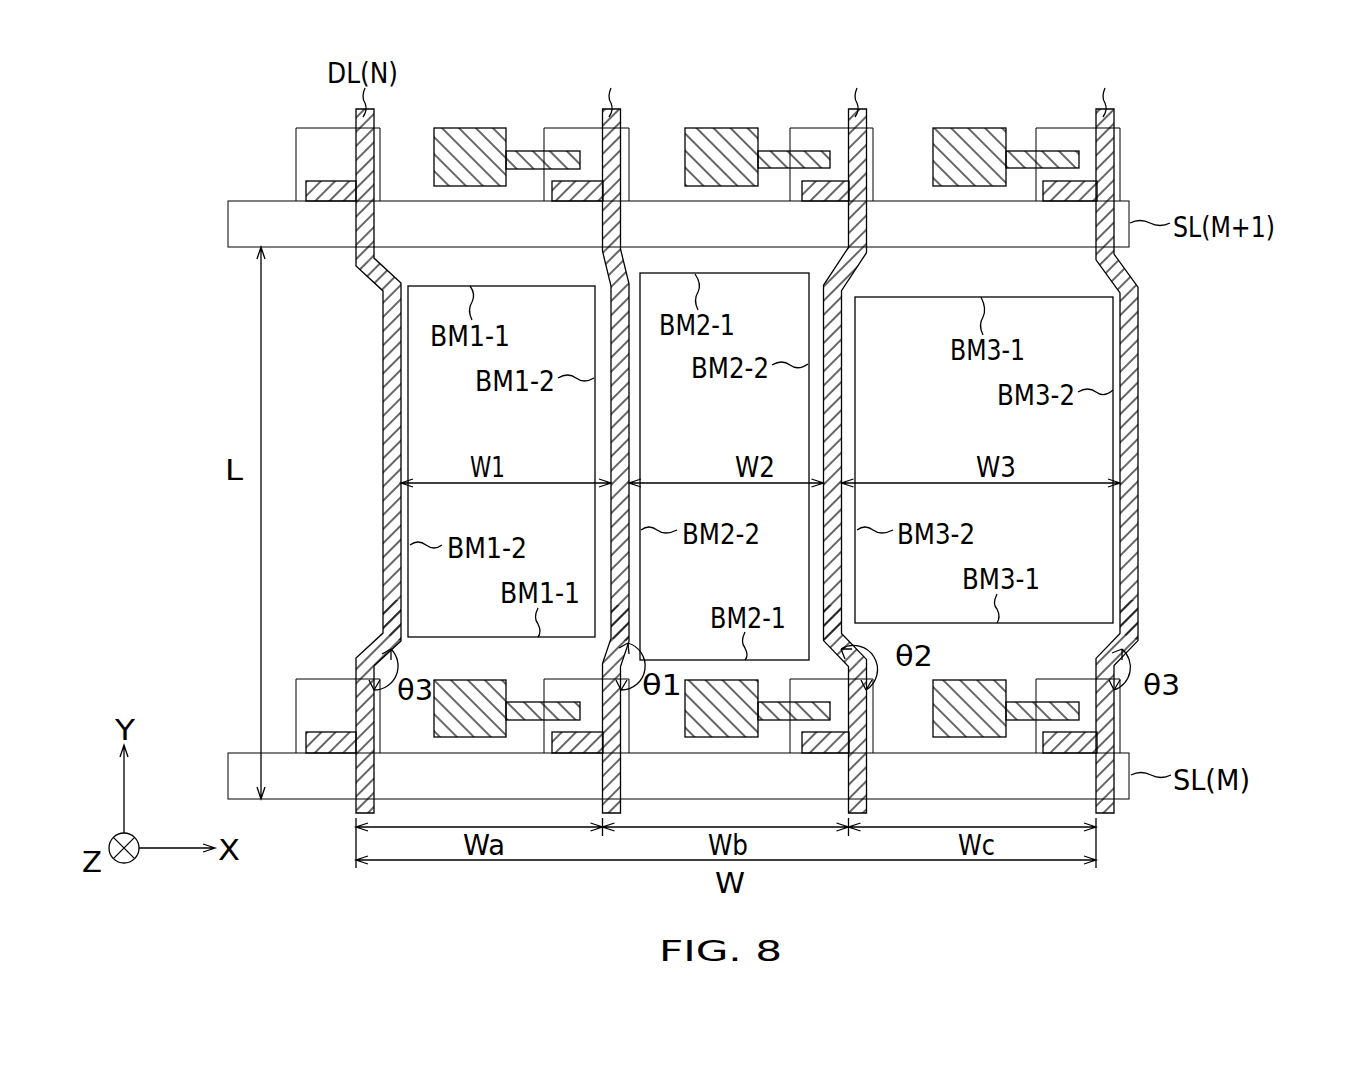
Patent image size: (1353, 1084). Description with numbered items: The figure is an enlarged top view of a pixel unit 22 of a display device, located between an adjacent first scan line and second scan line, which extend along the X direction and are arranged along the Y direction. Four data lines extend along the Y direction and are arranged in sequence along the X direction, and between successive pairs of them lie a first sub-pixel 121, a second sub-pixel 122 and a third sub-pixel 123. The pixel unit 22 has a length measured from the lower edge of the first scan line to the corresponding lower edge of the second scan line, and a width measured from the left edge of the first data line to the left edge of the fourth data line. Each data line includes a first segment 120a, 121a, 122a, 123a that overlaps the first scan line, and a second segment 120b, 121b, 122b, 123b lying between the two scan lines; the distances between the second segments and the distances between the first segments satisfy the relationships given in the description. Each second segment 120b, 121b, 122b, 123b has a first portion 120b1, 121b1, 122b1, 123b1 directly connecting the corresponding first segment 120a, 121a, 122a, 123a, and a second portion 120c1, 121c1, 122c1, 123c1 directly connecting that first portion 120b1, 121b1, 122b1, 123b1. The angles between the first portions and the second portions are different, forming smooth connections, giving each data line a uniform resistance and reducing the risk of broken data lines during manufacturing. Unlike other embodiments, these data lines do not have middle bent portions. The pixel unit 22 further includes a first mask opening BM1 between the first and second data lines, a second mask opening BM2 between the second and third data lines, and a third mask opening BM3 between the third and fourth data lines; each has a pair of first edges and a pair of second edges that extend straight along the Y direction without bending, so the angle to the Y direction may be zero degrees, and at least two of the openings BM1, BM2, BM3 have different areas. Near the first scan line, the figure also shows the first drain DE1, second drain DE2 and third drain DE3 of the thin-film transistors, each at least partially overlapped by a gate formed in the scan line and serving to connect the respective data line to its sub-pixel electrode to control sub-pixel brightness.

The pixel unit 22 is at (1226, 114).
The first sub-pixel 121 is at (479, 89).
The second sub-pixel 122 is at (726, 89).
The third sub-pixel 123 is at (974, 89).
The first segment 120a is at (366, 712).
The second segment 120b is at (382, 403).
The first portion 120b1 is at (362, 658).
The second portion 120c1 is at (378, 648).
The first segment 121a is at (621, 742).
The second segment 121b is at (629, 403).
The first portion 121b1 is at (622, 692).
The second portion 121c1 is at (614, 642).
The first segment 122a is at (866, 745).
The second segment 122b is at (842, 403).
The first portion 122b1 is at (866, 690).
The second portion 122c1 is at (835, 648).
The first segment 123a is at (1116, 735).
The second segment 123b is at (1139, 373).
The first portion 123b1 is at (1116, 698).
The second portion 123c1 is at (1106, 649).
The first mask opening BM1 is at (431, 286).
The second mask opening BM2 is at (685, 273).
The third mask opening BM3 is at (919, 297).
The first drain DE1 is at (507, 708).
The second drain DE2 is at (757, 708).
The third drain DE3 is at (1006, 708).